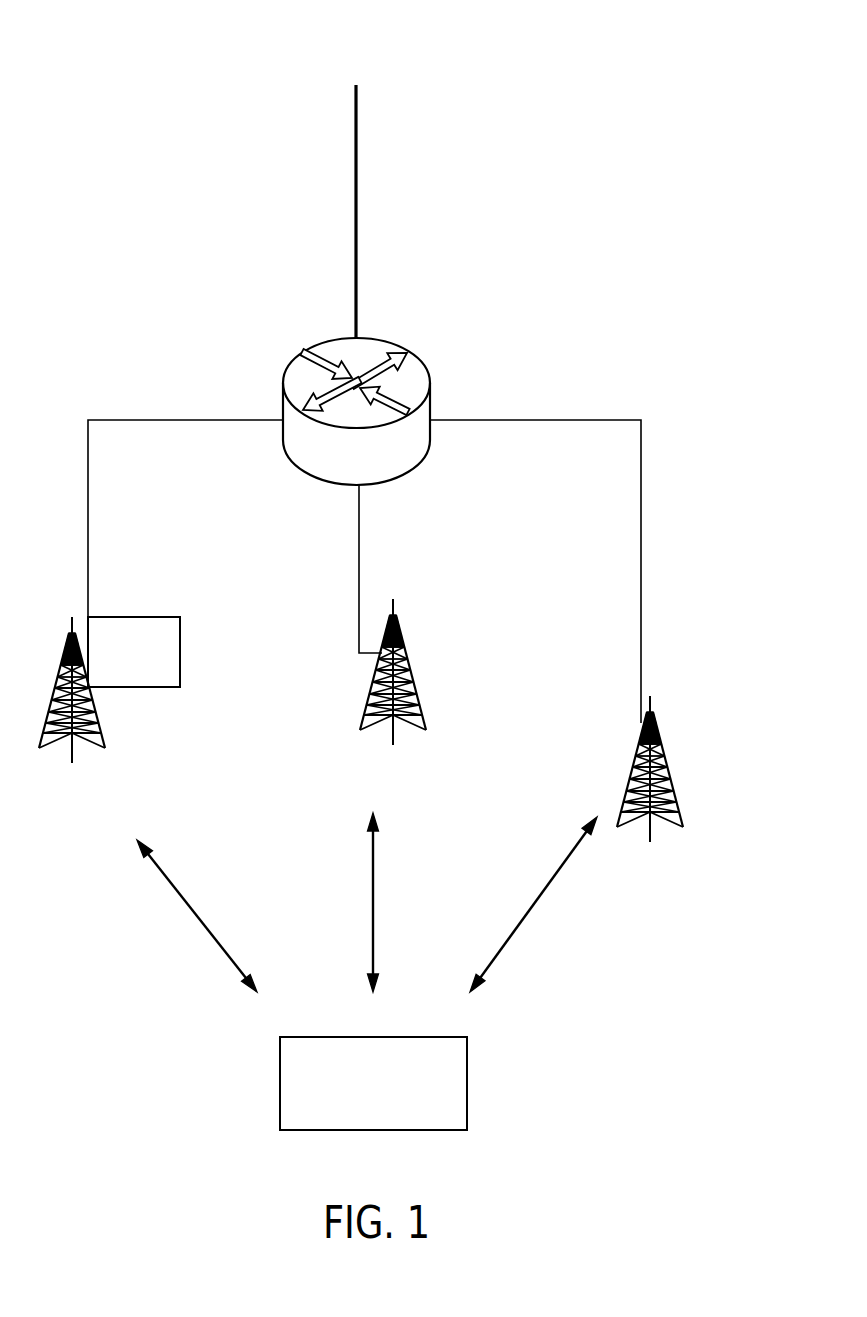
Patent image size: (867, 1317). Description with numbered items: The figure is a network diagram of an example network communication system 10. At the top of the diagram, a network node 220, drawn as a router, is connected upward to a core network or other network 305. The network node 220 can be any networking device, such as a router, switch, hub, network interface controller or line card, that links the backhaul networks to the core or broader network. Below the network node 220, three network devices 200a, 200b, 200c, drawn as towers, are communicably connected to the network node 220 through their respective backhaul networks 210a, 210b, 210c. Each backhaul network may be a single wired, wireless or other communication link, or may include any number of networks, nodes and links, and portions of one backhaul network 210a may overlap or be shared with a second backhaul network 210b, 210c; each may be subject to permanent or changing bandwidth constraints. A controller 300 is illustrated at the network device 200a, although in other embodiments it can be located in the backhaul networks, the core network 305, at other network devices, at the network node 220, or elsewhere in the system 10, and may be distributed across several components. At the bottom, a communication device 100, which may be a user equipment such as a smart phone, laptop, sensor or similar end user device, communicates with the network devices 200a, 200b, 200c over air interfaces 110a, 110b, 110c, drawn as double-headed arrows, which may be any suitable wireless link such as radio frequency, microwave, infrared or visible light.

The network communication system 10 is at (90, 72).
The core network 305 is at (358, 204).
The network node 220 is at (420, 373).
The backhaul network 210a is at (90, 506).
The backhaul network 210b is at (361, 537).
The backhaul network 210c is at (643, 506).
The controller 300 is at (148, 662).
The network device 200a is at (105, 743).
The network device 200b is at (428, 725).
The network device 200c is at (685, 818).
The air interface 110a is at (195, 913).
The air interface 110b is at (375, 898).
The air interface 110c is at (532, 910).
The communication device 100 is at (387, 1094).